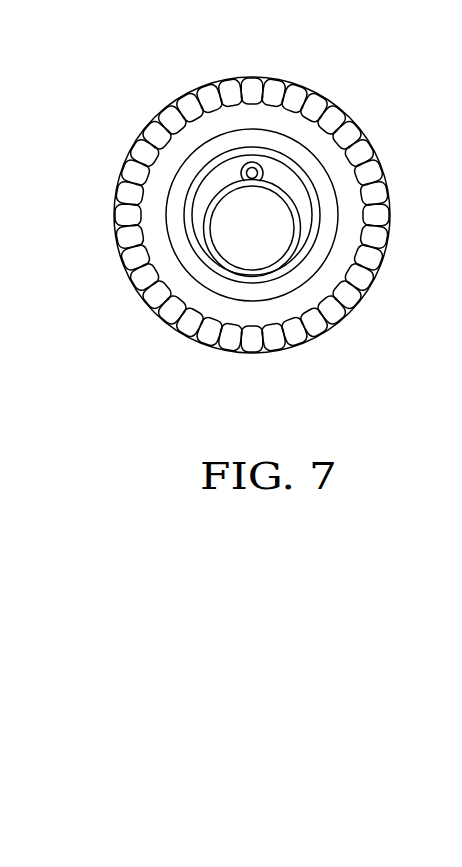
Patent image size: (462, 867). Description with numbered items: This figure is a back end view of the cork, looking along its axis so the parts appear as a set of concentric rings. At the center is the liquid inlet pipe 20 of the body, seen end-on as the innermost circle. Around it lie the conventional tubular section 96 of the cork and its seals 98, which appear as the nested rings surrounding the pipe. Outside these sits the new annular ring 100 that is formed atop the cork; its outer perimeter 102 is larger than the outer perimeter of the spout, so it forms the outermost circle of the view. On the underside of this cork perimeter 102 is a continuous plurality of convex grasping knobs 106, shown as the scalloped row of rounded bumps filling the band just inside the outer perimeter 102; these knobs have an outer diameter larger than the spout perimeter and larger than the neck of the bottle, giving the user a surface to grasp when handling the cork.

The liquid inlet pipe 20 is at (274, 234).
The tubular section 96 is at (297, 84).
The seals 98 is at (330, 102).
The annular ring 100 is at (262, 234).
The outer perimeter 102 is at (136, 141).
The convex grasping knobs 106 is at (253, 77).